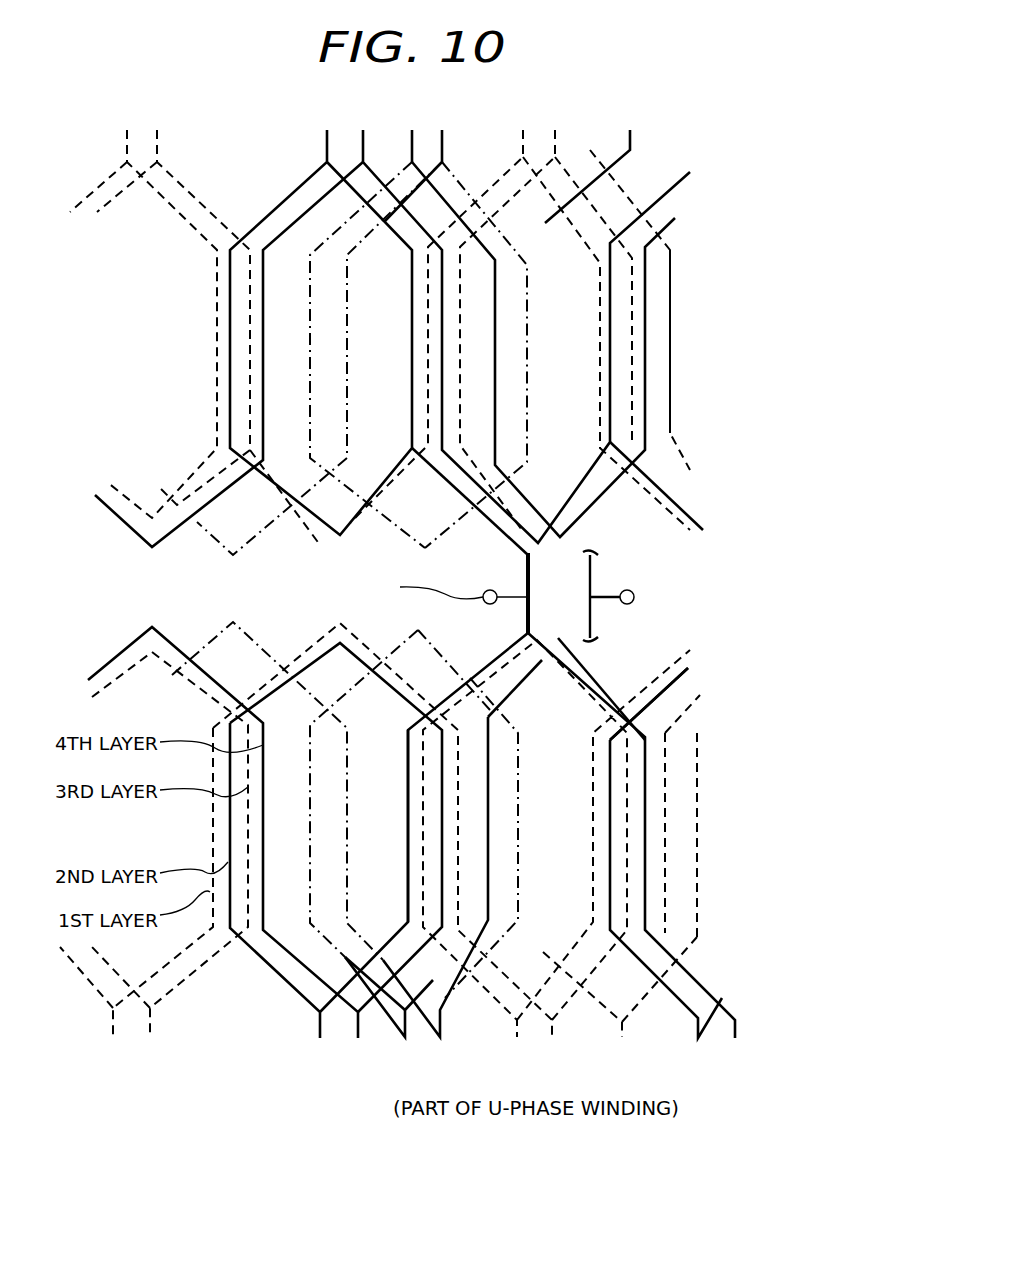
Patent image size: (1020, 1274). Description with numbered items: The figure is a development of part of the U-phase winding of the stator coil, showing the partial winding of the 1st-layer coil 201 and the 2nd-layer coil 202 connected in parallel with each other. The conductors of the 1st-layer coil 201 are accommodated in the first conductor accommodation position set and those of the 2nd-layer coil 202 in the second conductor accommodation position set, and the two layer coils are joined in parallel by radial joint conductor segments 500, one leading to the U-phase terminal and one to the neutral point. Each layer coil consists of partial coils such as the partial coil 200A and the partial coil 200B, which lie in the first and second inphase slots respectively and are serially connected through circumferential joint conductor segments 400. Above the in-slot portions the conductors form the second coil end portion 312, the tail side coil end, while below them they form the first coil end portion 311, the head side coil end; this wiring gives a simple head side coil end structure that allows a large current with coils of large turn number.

The 2nd-layer coil 202 is at (682, 340).
The 1st-layer coil 201 is at (712, 862).
The second coil end portion 312 is at (705, 533).
The first coil end portion 311 is at (648, 1010).
The radial joint conductor segment 500 is at (528, 573).
The circumferential joint conductor segment 400 is at (512, 688).
The partial coil 200A is at (400, 783).
The partial coil 200B is at (337, 960).